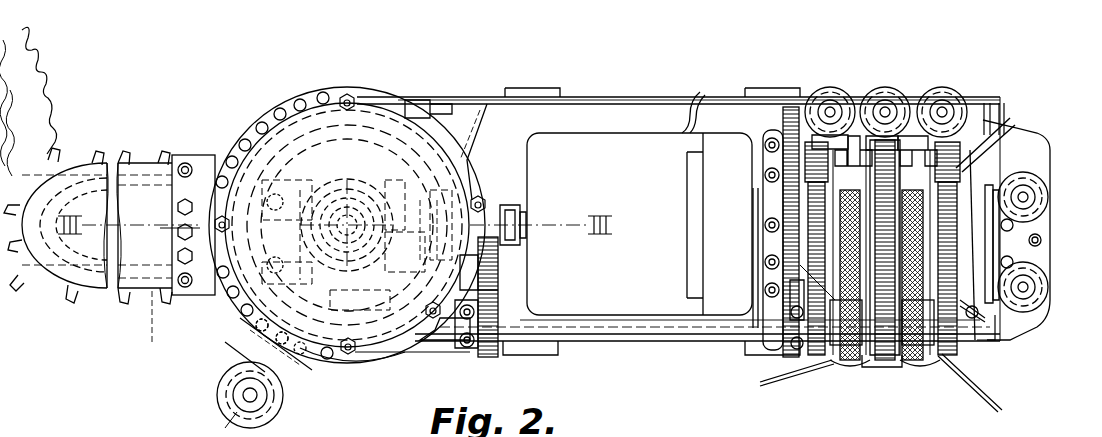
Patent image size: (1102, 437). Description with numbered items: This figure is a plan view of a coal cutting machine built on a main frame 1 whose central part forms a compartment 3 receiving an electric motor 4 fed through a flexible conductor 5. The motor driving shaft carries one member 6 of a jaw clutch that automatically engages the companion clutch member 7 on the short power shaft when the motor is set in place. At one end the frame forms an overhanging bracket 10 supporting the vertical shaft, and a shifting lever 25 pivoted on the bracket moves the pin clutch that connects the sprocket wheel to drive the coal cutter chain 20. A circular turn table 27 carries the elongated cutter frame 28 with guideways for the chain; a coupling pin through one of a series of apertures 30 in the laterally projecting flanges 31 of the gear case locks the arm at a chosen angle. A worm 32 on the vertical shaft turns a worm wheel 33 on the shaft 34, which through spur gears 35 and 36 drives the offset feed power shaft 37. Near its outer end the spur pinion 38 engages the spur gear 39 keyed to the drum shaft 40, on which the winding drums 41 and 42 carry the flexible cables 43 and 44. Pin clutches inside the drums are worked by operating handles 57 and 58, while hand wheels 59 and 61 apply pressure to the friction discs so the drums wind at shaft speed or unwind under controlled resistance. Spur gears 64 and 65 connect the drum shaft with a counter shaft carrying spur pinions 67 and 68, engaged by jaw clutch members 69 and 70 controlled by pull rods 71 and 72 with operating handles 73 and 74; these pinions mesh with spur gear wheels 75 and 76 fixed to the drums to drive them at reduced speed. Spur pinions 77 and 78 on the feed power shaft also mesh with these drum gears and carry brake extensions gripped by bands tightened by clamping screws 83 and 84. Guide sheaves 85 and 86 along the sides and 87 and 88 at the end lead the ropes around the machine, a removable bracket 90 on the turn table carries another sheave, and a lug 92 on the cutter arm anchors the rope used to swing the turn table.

The main frame 1 is at (640, 97).
The compartment 3 is at (601, 125).
The motor 4 is at (639, 224).
The flexible conductor 5 is at (705, 92).
The jaw clutch coupling member 6 is at (513, 205).
The clutch member 7 is at (495, 297).
The overhanging bracket 10 is at (425, 345).
The coal cutter chain 20 is at (88, 243).
The shifting lever 25 is at (432, 100).
The turn table 27 is at (248, 322).
The cutter frame 28 is at (177, 257).
The apertures 30 is at (254, 132).
The laterally projecting flanges 31 is at (290, 108).
The worm 32 is at (347, 218).
The worm wheel 33 is at (325, 262).
The shaft 34 is at (400, 355).
The spur gear 35 is at (498, 272).
The spur gear 36 is at (500, 312).
The feed power shaft 37 is at (590, 335).
The spur pinion 38 is at (883, 300).
The spur gear 39 is at (856, 320).
The drum shaft 40 is at (1040, 232).
The winding drum 41 is at (850, 270).
The winding drum 42 is at (912, 270).
The flexible cable 43 is at (838, 360).
The flexible cable 44 is at (910, 370).
The operating handle 57 is at (1005, 336).
The operating handle 58 is at (1000, 156).
The hand wheel 59 is at (990, 190).
The hand wheel 61 is at (1002, 200).
The spur gear 64 is at (763, 238).
The spur gear 65 is at (787, 107).
The spur pinion 67 is at (811, 142).
The spur pinion 68 is at (955, 150).
The jaw clutch member 69 is at (858, 140).
The jaw clutch member 70 is at (905, 140).
The pull rod 71 is at (832, 108).
The pull rod 72 is at (942, 108).
The operating handle 73 is at (1004, 128).
The operating handle 74 is at (990, 118).
The spur gear wheel 75 is at (812, 280).
The spur gear wheel 76 is at (1020, 310).
The spur pinion 77 is at (797, 374).
The spur pinion 78 is at (970, 383).
The clamping screw 83 is at (846, 372).
The clamping screw 84 is at (926, 372).
The guide sheave 85 is at (882, 370).
The guide sheave 86 is at (830, 92).
The guide sheave 87 is at (1045, 282).
The guide sheave 88 is at (1045, 185).
The removable bracket 90 is at (285, 390).
The lug 92 is at (168, 233).